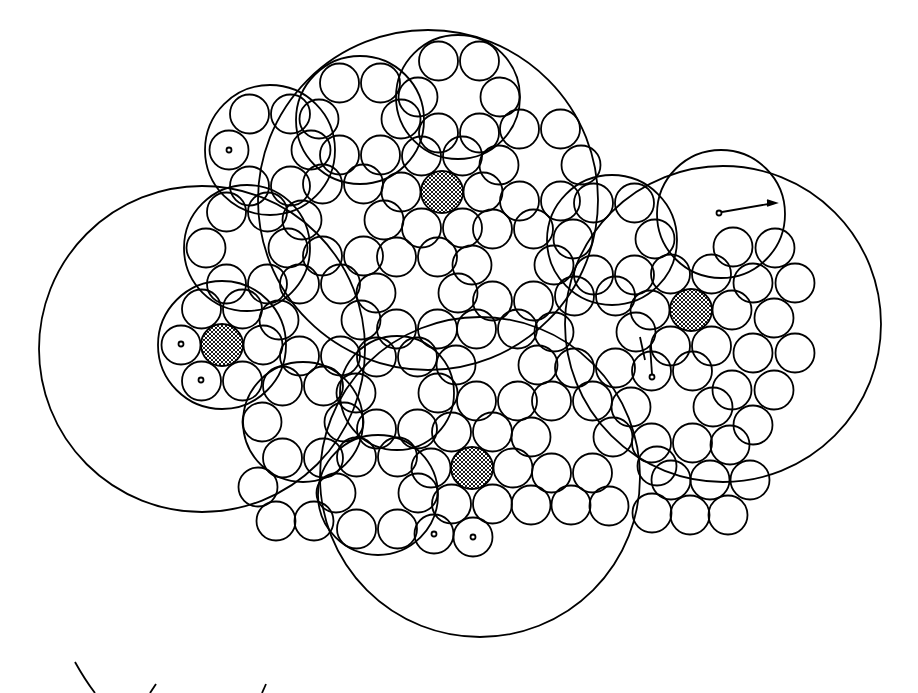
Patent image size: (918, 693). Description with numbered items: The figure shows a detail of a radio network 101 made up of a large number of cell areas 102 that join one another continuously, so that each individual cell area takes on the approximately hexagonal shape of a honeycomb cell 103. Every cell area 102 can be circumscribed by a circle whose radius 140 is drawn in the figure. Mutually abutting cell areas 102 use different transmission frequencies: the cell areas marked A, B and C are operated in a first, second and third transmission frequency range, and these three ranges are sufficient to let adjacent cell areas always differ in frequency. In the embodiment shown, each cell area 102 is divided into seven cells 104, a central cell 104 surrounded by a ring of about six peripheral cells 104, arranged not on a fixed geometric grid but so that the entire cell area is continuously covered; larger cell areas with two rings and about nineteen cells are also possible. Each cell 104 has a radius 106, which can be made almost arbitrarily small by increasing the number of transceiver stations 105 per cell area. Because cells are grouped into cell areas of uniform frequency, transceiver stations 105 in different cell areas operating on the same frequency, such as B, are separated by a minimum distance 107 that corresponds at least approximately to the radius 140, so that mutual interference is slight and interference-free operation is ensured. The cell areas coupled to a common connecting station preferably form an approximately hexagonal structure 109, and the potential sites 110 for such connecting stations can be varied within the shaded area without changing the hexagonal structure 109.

The radio network 101 is at (646, 106).
The cell area 102 is at (398, 56).
The honeycomb cell 103 is at (516, 112).
The cell 104 is at (190, 305).
The transceiver station 105 is at (208, 157).
The radius of a cell 106 is at (212, 142).
The minimum distance 107 is at (637, 342).
The hexagonal structure 109 is at (535, 70).
The potential site 110 is at (486, 490).
The radius of a cell area 140 is at (745, 200).